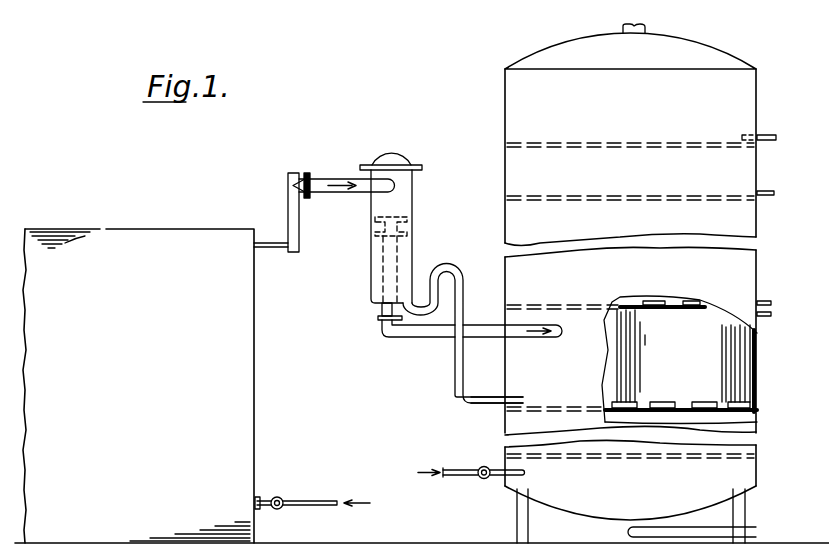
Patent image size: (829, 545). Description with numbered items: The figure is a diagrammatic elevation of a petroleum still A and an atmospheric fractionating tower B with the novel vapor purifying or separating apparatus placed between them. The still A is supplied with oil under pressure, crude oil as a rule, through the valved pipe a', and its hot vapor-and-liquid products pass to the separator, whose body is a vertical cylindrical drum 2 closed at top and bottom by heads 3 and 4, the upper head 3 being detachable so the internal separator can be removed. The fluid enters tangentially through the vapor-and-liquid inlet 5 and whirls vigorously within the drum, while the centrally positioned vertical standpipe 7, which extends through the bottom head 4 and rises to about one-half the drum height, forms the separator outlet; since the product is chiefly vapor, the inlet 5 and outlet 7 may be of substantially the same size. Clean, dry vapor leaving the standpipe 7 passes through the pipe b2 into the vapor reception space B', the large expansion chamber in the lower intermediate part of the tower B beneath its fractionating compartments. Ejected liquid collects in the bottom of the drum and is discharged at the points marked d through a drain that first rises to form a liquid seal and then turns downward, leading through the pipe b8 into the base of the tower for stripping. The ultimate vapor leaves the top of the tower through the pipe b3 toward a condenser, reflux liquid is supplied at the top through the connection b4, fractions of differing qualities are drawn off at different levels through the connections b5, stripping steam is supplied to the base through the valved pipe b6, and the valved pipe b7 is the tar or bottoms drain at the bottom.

The petroleum still A is at (138, 386).
The fractionating tower B is at (630, 288).
The vapor reception space B' is at (679, 360).
The valved pipe a' is at (312, 494).
The vertical cylindrical drum 2 is at (412, 207).
The upper head 3 is at (390, 160).
The bottom head 4 is at (371, 303).
The vapor-and-liquid inlet 5 is at (368, 193).
The standpipe 7 is at (407, 248).
The separator drain d is at (463, 333).
The pipe b2 is at (477, 328).
The pipe b3 is at (621, 31).
The connection b4 is at (770, 124).
The connections b5 is at (770, 184).
The valved pipe b6 is at (466, 463).
The valved pipe b7 is at (726, 523).
The pipe b8 is at (481, 400).